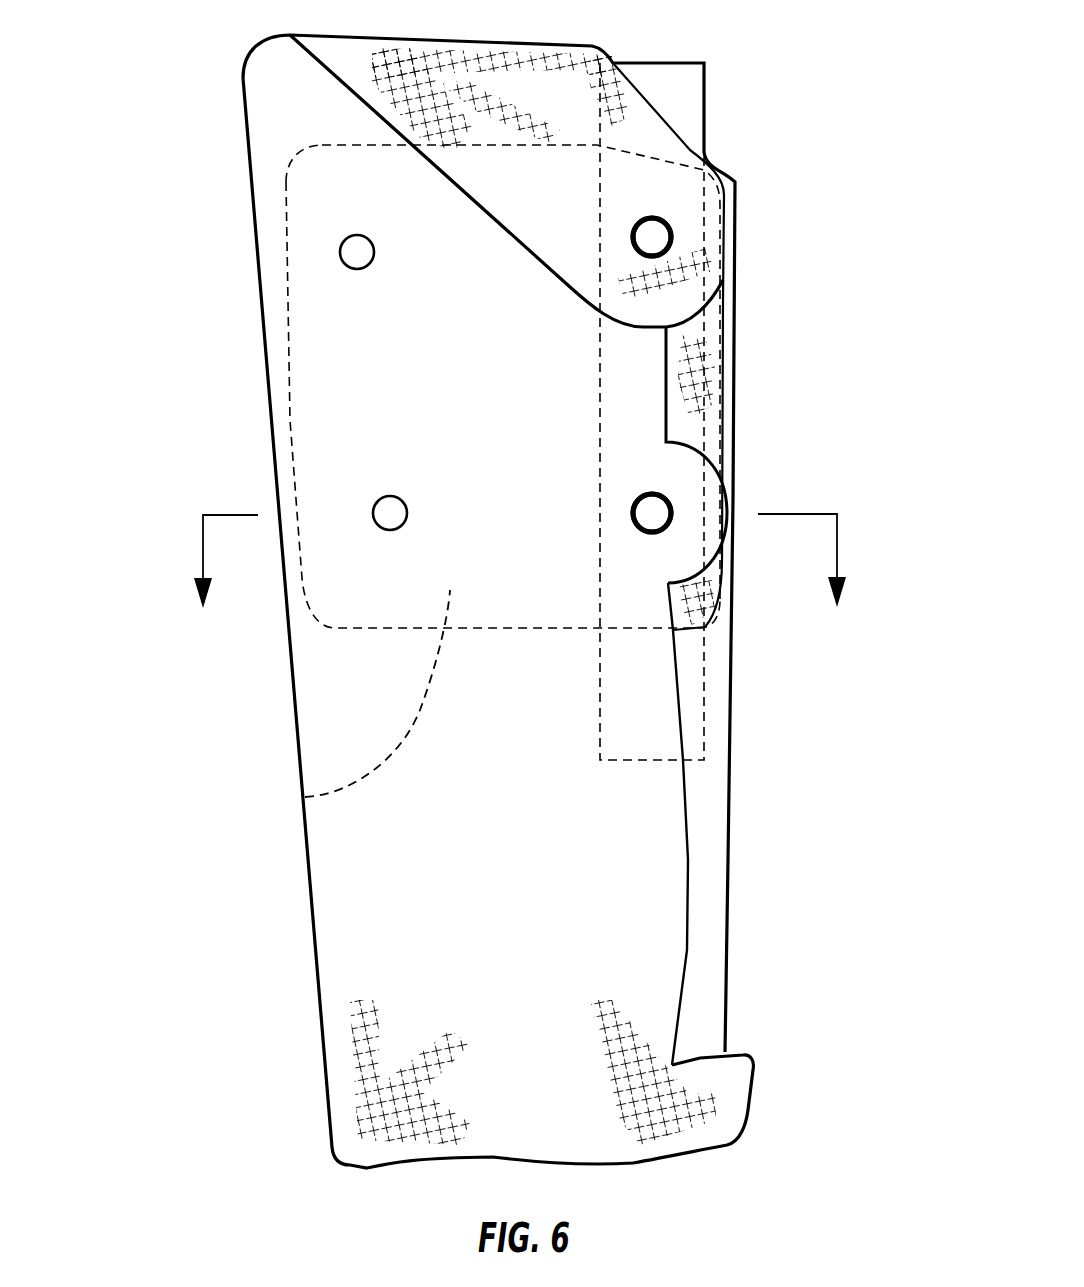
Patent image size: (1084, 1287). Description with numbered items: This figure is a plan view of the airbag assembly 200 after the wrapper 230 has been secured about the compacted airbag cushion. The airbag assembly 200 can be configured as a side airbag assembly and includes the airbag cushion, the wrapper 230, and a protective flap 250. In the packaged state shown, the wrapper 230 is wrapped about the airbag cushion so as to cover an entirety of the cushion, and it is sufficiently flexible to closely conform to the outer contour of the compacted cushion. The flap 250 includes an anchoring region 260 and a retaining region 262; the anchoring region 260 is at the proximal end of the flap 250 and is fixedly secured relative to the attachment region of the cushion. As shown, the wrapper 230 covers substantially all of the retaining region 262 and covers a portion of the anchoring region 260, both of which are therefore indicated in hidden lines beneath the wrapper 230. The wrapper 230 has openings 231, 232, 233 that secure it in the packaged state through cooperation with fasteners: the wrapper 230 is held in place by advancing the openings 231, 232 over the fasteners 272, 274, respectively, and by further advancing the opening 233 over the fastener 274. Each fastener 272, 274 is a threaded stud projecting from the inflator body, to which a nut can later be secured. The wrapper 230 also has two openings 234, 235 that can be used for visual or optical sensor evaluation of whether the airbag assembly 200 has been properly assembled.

The airbag assembly 200 is at (157, 66).
The wrapper 230 is at (332, 880).
The opening 231 is at (642, 550).
The opening 232 is at (754, 186).
The opening 233 is at (686, 229).
The opening 234 is at (365, 494).
The opening 235 is at (334, 241).
The protective flap 250 is at (305, 797).
The anchoring region 260 is at (484, 443).
The retaining region 262 is at (386, 588).
The fastener 272 is at (655, 515).
The fastener 274 is at (653, 237).